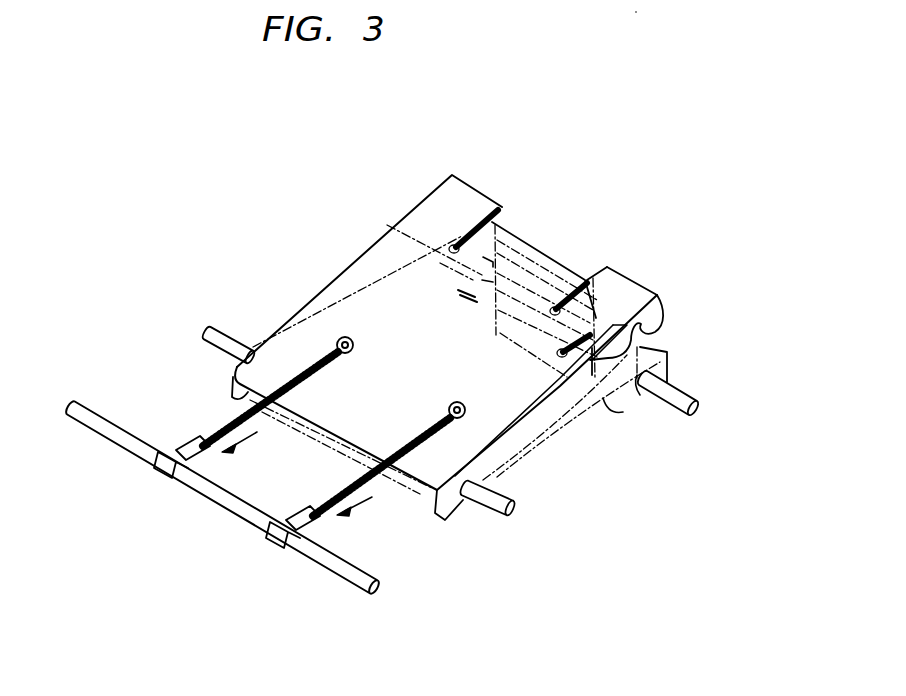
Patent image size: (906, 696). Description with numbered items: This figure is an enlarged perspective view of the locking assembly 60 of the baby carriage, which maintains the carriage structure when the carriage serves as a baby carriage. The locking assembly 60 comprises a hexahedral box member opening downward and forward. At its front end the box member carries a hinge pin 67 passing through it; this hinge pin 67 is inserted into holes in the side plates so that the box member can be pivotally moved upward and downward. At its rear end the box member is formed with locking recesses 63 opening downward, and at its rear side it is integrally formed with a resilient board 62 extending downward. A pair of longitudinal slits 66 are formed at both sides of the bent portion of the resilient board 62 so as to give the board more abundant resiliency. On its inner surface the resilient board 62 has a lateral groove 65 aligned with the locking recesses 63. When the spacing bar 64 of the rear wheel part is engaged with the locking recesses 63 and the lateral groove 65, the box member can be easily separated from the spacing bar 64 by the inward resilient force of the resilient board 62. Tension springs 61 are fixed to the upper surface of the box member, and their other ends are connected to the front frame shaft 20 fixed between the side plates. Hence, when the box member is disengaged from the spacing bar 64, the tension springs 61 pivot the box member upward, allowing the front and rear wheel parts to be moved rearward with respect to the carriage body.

The front frame shaft 20 is at (227, 504).
The locking assembly 60 is at (288, 262).
The tension springs 61 is at (222, 422).
The resilient board 62 is at (533, 250).
The locking recesses 63 is at (637, 332).
The spacing bar 64 is at (665, 405).
The lateral groove 65 is at (607, 267).
The longitudinal slits 66 is at (486, 225).
The hinge pin 67 is at (490, 502).